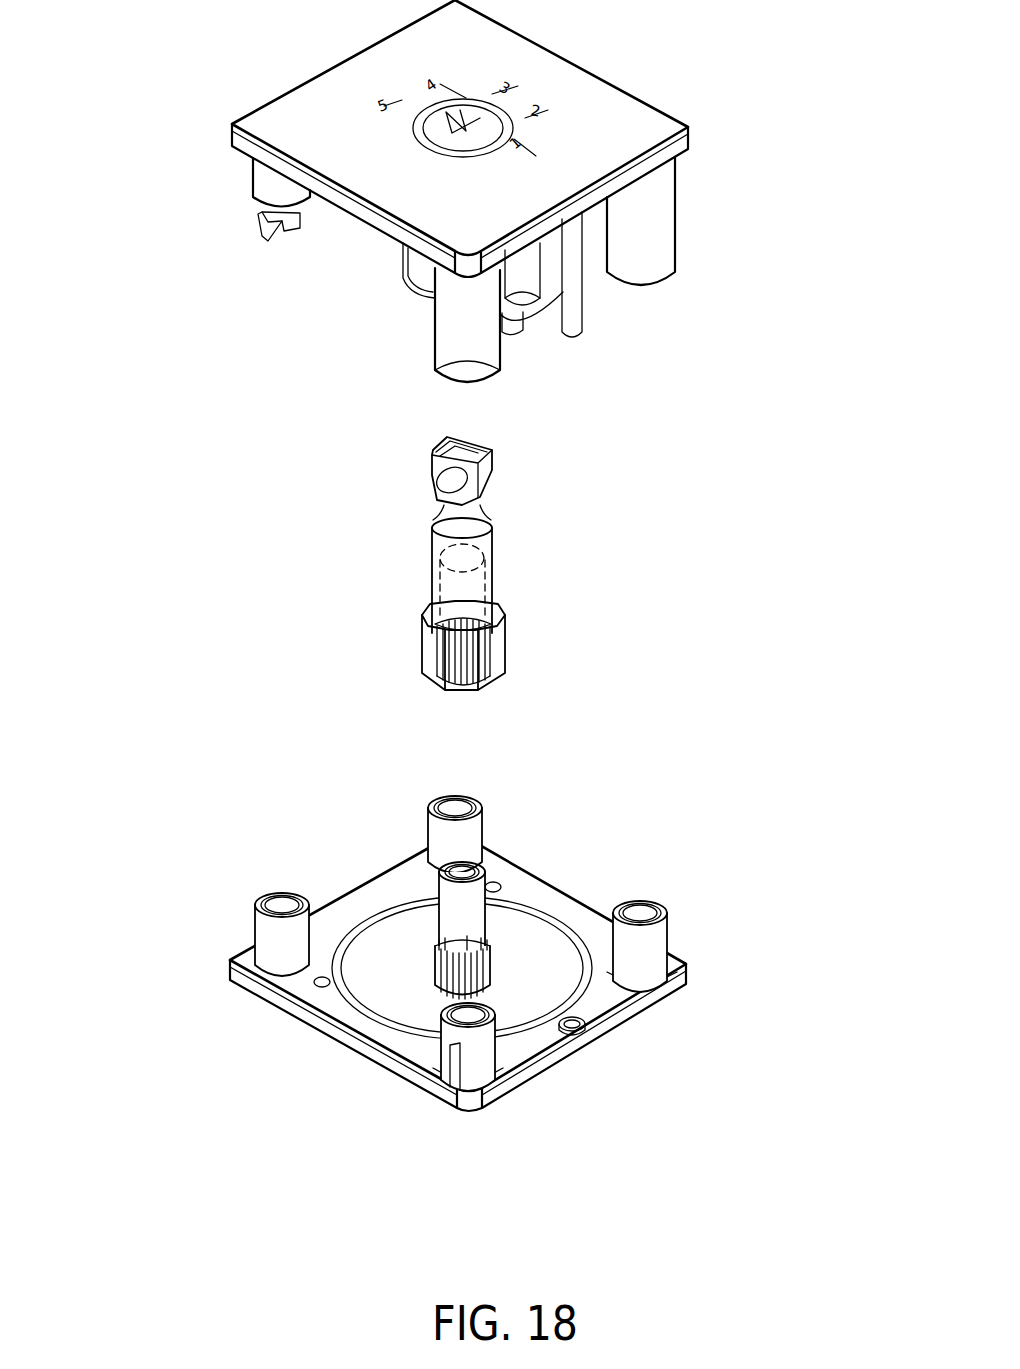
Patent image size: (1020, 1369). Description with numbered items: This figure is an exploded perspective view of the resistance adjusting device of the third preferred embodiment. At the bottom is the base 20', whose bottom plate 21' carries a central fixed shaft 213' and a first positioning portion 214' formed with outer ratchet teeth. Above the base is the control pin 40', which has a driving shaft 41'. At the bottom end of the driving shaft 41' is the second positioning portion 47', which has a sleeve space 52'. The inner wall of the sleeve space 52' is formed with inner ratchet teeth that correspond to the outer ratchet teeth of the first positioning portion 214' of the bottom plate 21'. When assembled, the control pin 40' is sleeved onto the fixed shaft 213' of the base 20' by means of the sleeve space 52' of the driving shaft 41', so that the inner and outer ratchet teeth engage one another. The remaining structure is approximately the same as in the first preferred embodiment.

The base 20' is at (437, 952).
The bottom plate 21' is at (449, 984).
The control pin 40' is at (481, 604).
The driving shaft 41' is at (556, 575).
The second positioning portion 47' is at (556, 645).
The sleeve space 52' is at (396, 695).
The fixed shaft 213' is at (573, 859).
The first positioning portion 214' is at (606, 928).